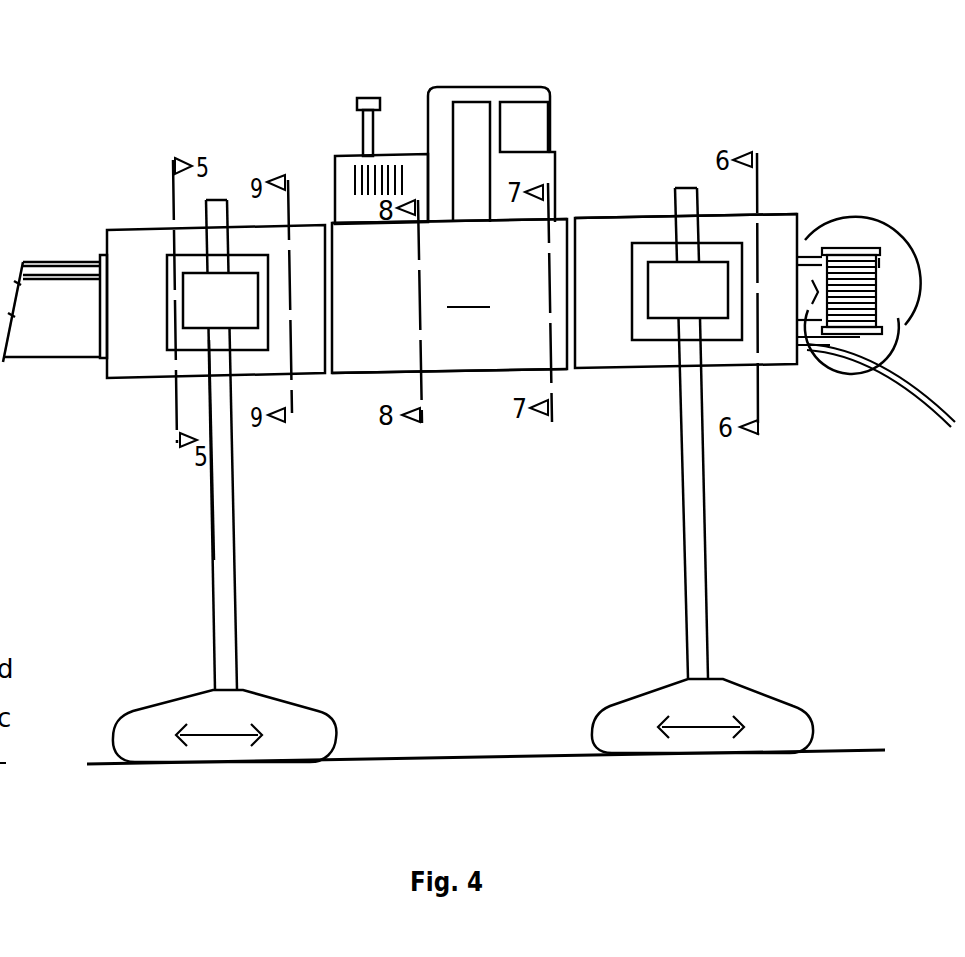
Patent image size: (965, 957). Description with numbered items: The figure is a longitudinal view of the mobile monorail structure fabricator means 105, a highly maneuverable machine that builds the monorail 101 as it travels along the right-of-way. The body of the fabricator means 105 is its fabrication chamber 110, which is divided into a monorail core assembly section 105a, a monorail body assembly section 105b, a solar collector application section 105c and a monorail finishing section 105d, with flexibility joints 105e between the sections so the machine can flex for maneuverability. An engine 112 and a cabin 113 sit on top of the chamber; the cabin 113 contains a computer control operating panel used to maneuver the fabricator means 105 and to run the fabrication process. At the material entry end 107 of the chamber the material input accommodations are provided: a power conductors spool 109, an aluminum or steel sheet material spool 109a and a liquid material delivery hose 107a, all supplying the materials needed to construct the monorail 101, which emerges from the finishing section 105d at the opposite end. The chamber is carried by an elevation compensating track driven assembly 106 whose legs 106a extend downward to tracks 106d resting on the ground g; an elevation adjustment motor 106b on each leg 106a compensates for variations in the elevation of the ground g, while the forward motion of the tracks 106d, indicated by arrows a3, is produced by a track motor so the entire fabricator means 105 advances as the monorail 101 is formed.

The monorail 101 is at (70, 347).
The mobile monorail structure fabricator means 105 is at (480, 292).
The monorail core assembly section 105a is at (658, 358).
The monorail body assembly section 105b is at (505, 358).
The solar collector application section 105c is at (367, 363).
The monorail finishing section 105d is at (245, 368).
The flexibility joints 105e is at (332, 222).
The elevation compensating track driven assembly 106 is at (411, 439).
The legs 106a is at (215, 530).
The elevation adjustment motor 106b is at (199, 320).
The tracks 106d is at (207, 688).
The material entry end 107 is at (803, 243).
The liquid material delivery hose 107a is at (923, 383).
The power conductors spool 109 is at (832, 373).
The aluminum or steel sheet material spool 109a is at (860, 222).
The fabrication chamber 110 is at (468, 294).
The engine 112 is at (348, 155).
The cabin 113 is at (497, 95).
The arrows indicating forward motion of tracks a3 is at (220, 738).
The ground g is at (827, 753).